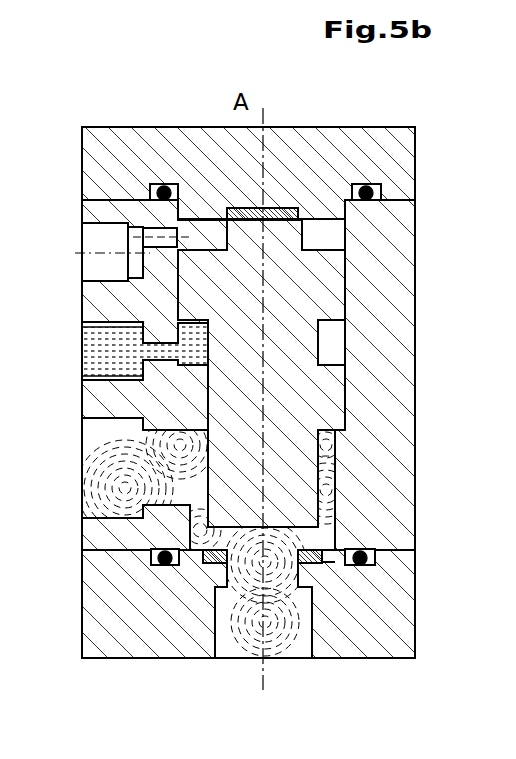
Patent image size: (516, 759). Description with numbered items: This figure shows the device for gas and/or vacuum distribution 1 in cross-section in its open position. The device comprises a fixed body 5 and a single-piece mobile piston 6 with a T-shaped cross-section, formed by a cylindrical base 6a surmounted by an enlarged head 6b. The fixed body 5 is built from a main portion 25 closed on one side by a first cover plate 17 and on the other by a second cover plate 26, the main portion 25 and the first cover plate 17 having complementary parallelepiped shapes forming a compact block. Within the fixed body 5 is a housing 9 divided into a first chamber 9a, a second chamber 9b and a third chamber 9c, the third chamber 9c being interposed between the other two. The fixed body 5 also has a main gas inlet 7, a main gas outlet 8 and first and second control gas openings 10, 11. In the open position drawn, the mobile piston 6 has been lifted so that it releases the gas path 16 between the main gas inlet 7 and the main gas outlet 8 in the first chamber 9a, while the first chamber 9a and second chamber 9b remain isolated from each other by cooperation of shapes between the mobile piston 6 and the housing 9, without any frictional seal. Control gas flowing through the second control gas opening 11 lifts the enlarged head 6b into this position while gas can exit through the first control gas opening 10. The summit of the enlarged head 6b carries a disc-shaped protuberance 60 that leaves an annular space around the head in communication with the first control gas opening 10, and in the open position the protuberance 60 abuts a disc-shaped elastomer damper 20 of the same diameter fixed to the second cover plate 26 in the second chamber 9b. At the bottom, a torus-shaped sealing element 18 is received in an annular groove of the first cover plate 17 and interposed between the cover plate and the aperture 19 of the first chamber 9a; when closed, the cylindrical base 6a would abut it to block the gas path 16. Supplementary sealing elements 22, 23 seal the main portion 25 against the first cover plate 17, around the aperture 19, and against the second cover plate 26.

The device for gas and/or vacuum distribution 1 is at (108, 100).
The fixed body 5 is at (155, 664).
The mobile piston 6 is at (227, 402).
The cylindrical base 6a is at (287, 493).
The enlarged head 6b is at (197, 293).
The main gas inlet 7 is at (240, 660).
The main gas outlet 8 is at (88, 448).
The housing 9 is at (316, 240).
The first chamber 9a is at (335, 457).
The second chamber 9b is at (337, 348).
The third chamber 9c is at (310, 396).
The first control gas opening 10 is at (90, 238).
The second control gas opening 11 is at (92, 347).
The gas path 16 is at (222, 545).
The first cover plate 17 is at (372, 640).
The sealing element 18 is at (325, 557).
The aperture 19 is at (278, 560).
The damper 20 is at (273, 210).
The supplementary sealing element 22 is at (163, 552).
The supplementary sealing element 23 is at (365, 183).
The main portion 25 is at (131, 208).
The second cover plate 26 is at (105, 153).
The protuberance 60 is at (285, 232).